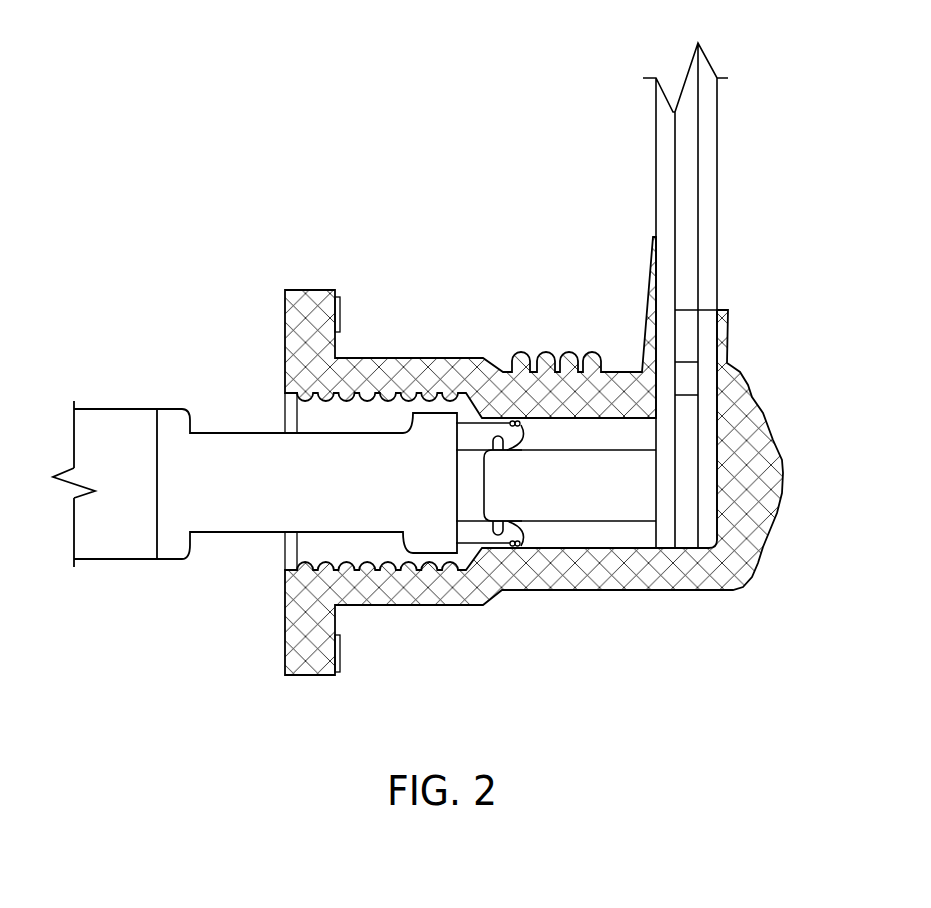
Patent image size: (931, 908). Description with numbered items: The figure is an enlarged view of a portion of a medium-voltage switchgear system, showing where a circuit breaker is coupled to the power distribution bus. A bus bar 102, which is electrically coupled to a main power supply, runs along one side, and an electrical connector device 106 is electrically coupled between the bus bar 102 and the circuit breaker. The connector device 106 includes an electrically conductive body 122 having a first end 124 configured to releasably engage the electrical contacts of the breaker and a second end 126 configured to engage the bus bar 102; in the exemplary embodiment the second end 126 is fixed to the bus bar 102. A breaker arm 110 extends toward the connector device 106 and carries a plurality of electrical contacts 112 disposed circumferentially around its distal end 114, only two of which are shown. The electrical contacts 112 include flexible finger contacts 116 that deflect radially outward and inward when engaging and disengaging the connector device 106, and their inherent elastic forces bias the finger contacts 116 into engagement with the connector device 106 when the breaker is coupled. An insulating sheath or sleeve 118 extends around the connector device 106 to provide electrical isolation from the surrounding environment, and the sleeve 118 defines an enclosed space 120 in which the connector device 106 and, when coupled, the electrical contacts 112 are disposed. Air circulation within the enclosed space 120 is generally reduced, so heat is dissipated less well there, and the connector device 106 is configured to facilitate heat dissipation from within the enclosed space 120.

The bus bar 102 is at (700, 273).
The electrical connector device 106 is at (592, 530).
The breaker arm 110 is at (237, 433).
The electrical contact 112 is at (497, 420).
The distal end 114 is at (458, 422).
The finger contact 116 is at (522, 432).
The insulating sleeve 118 is at (403, 622).
The enclosed space 120 is at (621, 435).
The electrically conductive body 122 is at (548, 523).
The first end 124 is at (483, 527).
The second end 126 is at (642, 512).